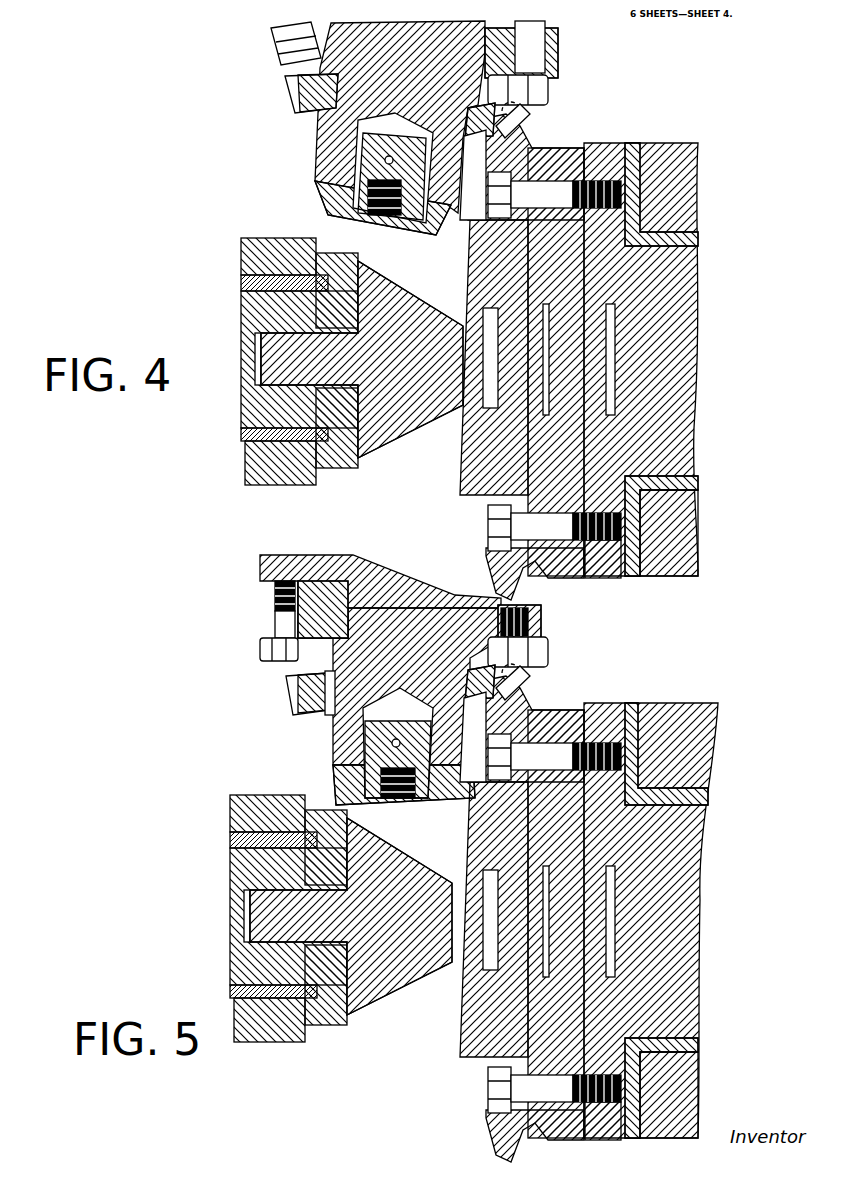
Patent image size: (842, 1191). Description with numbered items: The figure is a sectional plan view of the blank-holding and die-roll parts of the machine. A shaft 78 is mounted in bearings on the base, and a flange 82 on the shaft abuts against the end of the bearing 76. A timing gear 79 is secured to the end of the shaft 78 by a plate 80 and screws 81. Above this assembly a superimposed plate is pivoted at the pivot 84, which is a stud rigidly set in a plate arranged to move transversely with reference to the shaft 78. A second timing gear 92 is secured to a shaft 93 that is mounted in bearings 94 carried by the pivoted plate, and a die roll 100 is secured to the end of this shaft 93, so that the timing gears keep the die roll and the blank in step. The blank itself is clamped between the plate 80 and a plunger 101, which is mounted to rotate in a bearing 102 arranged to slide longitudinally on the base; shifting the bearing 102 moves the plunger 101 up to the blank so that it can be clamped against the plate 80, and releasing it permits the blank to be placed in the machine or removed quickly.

In FIG. 4, the bearing 76 is at (671, 537).
In FIG. 4, the shaft 78 is at (675, 434).
In FIG. 5, the shaft 78 is at (676, 920).
In FIG. 4, the timing gear 79 is at (540, 142).
In FIG. 5, the timing gear 79 is at (538, 921).
In FIG. 4, the plate 80 is at (473, 493).
In FIG. 5, the plate 80 is at (479, 943).
In FIG. 4, the screws 81 is at (552, 188).
In FIG. 4, the flange 82 is at (603, 553).
In FIG. 4, the pivot 84 is at (522, 103).
In FIG. 5, the pivot 84 is at (528, 706).
In FIG. 4, the timing gear 92 is at (276, 86).
In FIG. 5, the timing gear 92 is at (276, 692).
In FIG. 4, the shaft 93 is at (548, 35).
In FIG. 5, the shaft 93 is at (333, 582).
In FIG. 5, the bearings 94 is at (262, 548).
In FIG. 4, the die roll 100 is at (305, 186).
In FIG. 5, the die roll 100 is at (325, 779).
In FIG. 4, the plunger 101 is at (402, 403).
In FIG. 5, the plunger 101 is at (390, 968).
In FIG. 4, the bearing 102 is at (240, 242).
In FIG. 5, the bearing 102 is at (225, 803).